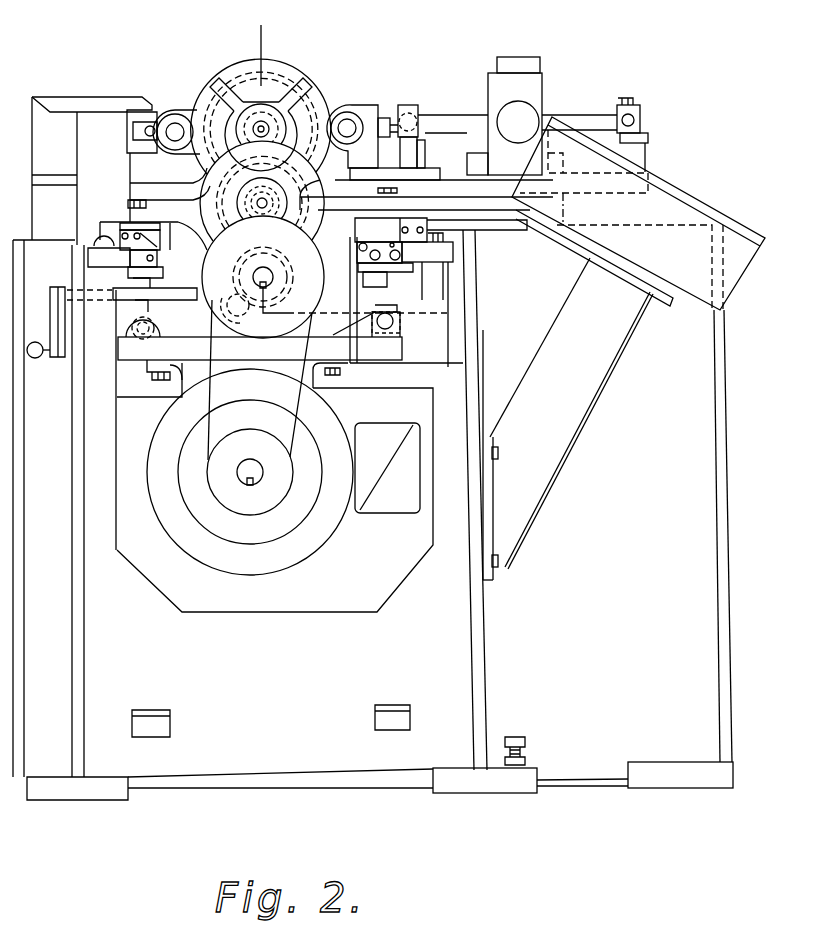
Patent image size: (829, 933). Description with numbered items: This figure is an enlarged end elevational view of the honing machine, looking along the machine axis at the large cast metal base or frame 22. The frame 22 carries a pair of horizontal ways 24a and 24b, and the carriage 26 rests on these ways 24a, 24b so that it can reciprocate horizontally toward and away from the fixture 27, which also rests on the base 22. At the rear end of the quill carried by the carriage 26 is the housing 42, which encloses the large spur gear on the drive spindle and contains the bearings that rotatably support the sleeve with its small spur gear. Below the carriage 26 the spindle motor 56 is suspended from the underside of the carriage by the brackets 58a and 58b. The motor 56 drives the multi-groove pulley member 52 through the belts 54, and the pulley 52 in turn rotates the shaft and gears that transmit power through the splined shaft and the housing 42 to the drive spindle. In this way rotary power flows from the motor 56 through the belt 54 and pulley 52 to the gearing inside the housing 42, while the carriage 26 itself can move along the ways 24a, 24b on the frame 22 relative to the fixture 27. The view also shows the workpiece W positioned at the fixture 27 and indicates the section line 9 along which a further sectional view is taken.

The base or frame 22 is at (292, 669).
The horizontal way 24a is at (112, 232).
The horizontal way 24b is at (443, 233).
The carriage 26 is at (393, 208).
The fixture 27 is at (528, 58).
The housing 42 is at (222, 77).
The multi-groove pulley member 52 is at (295, 307).
The belts 54 is at (212, 423).
The spindle motor 56 is at (313, 540).
The bracket 58a is at (182, 380).
The bracket 58b is at (320, 386).
The workpiece W is at (453, 115).
The section line 9- 9 is at (287, 29).